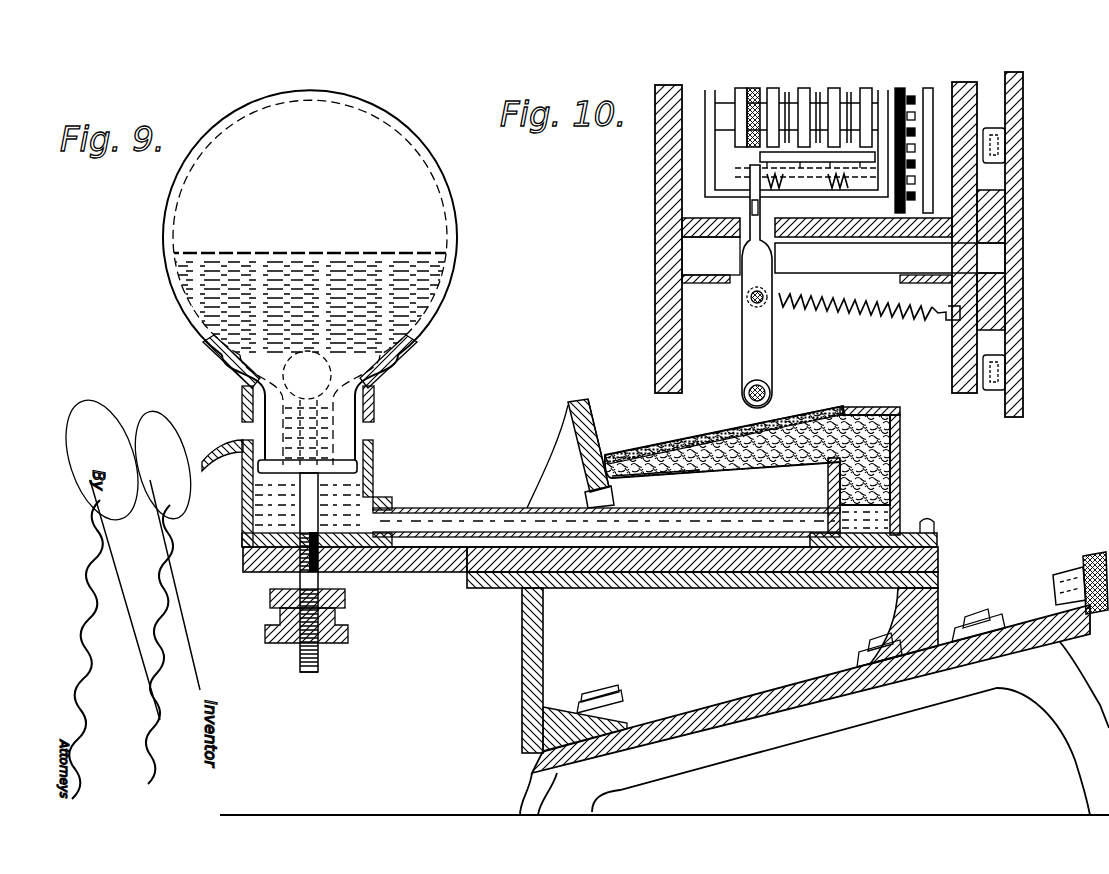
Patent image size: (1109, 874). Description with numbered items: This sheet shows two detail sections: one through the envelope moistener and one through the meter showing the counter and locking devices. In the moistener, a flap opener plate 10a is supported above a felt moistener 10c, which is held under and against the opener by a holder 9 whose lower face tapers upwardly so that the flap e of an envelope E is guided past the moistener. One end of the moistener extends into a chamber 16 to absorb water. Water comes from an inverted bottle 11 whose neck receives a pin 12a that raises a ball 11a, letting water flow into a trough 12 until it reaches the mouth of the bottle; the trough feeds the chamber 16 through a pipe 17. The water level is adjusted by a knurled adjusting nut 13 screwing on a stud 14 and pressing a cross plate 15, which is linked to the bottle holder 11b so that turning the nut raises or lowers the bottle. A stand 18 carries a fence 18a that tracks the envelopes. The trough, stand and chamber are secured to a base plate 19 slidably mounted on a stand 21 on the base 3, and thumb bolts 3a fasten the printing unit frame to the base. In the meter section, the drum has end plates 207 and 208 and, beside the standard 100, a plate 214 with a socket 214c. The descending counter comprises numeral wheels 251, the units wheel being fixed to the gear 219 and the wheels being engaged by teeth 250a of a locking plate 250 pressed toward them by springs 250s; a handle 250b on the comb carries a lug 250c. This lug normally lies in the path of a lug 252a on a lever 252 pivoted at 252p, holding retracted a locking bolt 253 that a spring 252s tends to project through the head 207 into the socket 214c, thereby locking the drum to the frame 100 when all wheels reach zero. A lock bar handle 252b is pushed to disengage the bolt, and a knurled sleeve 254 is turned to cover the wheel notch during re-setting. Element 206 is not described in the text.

In FIG. 9, the base 3 is at (1096, 750).
In FIG. 9, the thumb bolts 3a is at (1066, 578).
In FIG. 9, the holder 9 is at (903, 456).
In FIG. 9, the flap opener plate 10a is at (698, 446).
In FIG. 9, the felt moistener 10c is at (725, 474).
In FIG. 9, the envelope E is at (660, 448).
In FIG. 9, the envelope flap e is at (664, 479).
In FIG. 9, the inverted bottle 11 is at (410, 232).
In FIG. 9, the ball 11a is at (312, 363).
In FIG. 9, the bottle holder 11b is at (373, 407).
In FIG. 9, the trough 12 is at (373, 472).
In FIG. 9, the pin 12a is at (310, 519).
In FIG. 9, the knurled adjusting nut 13 is at (348, 636).
In FIG. 9, the stud 14 is at (309, 665).
In FIG. 9, the cross plate 15 is at (270, 598).
In FIG. 9, the chamber 16 is at (885, 527).
In FIG. 9, the pipe 17 is at (470, 510).
In FIG. 9, the stand 18 is at (565, 487).
In FIG. 9, the fence 18a is at (592, 428).
In FIG. 9, the base plate 19 is at (395, 556).
In FIG. 9, the stand 21 is at (920, 604).
In FIG. 10, the standard 100 is at (1010, 340).
In FIG. 10, the plate 206 is at (932, 232).
In FIG. 10, the end plate 207 is at (967, 354).
In FIG. 10, the end plate 208 is at (672, 358).
In FIG. 10, the plate 214 is at (990, 307).
In FIG. 10, the socket 214c is at (990, 260).
In FIG. 10, the units wheel gear 219 is at (901, 88).
In FIG. 10, the locking plate 250 is at (818, 176).
In FIG. 10, the tooth 250a is at (758, 152).
In FIG. 10, the handle 250b is at (752, 173).
In FIG. 10, the lug 250c is at (752, 203).
In FIG. 10, the springs 250s is at (831, 197).
In FIG. 10, the numeral wheels 251 is at (825, 92).
In FIG. 10, the lever 252 is at (762, 333).
In FIG. 10, the lug 252a is at (750, 212).
In FIG. 10, the lock bar handle 252b is at (767, 216).
In FIG. 10, the pivot 252p is at (752, 398).
In FIG. 10, the spring 252s is at (840, 314).
In FIG. 10, the locking bolt 253 is at (833, 268).
In FIG. 10, the knurled sleeve 254 is at (755, 90).